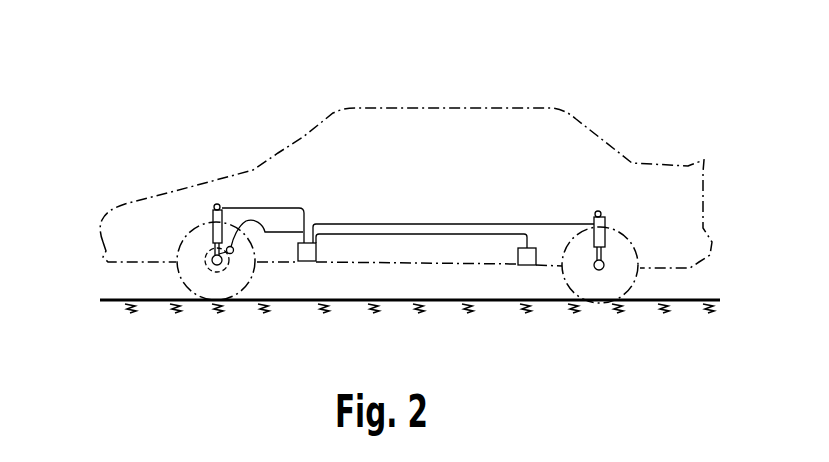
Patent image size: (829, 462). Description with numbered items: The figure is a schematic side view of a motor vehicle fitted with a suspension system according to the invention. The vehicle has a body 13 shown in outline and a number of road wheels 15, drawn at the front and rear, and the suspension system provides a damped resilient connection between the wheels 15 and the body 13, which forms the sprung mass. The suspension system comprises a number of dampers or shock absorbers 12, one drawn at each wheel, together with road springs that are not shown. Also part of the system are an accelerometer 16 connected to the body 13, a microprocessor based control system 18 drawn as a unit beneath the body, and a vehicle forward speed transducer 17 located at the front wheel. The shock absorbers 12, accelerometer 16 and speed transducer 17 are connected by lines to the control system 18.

The shock absorber 12 is at (213, 217).
The body 13 is at (405, 109).
The road wheel 15 is at (184, 242).
The accelerometer 16 is at (524, 265).
The vehicle forward speed transducer 17 is at (230, 254).
The microprocessor based control system 18 is at (304, 261).